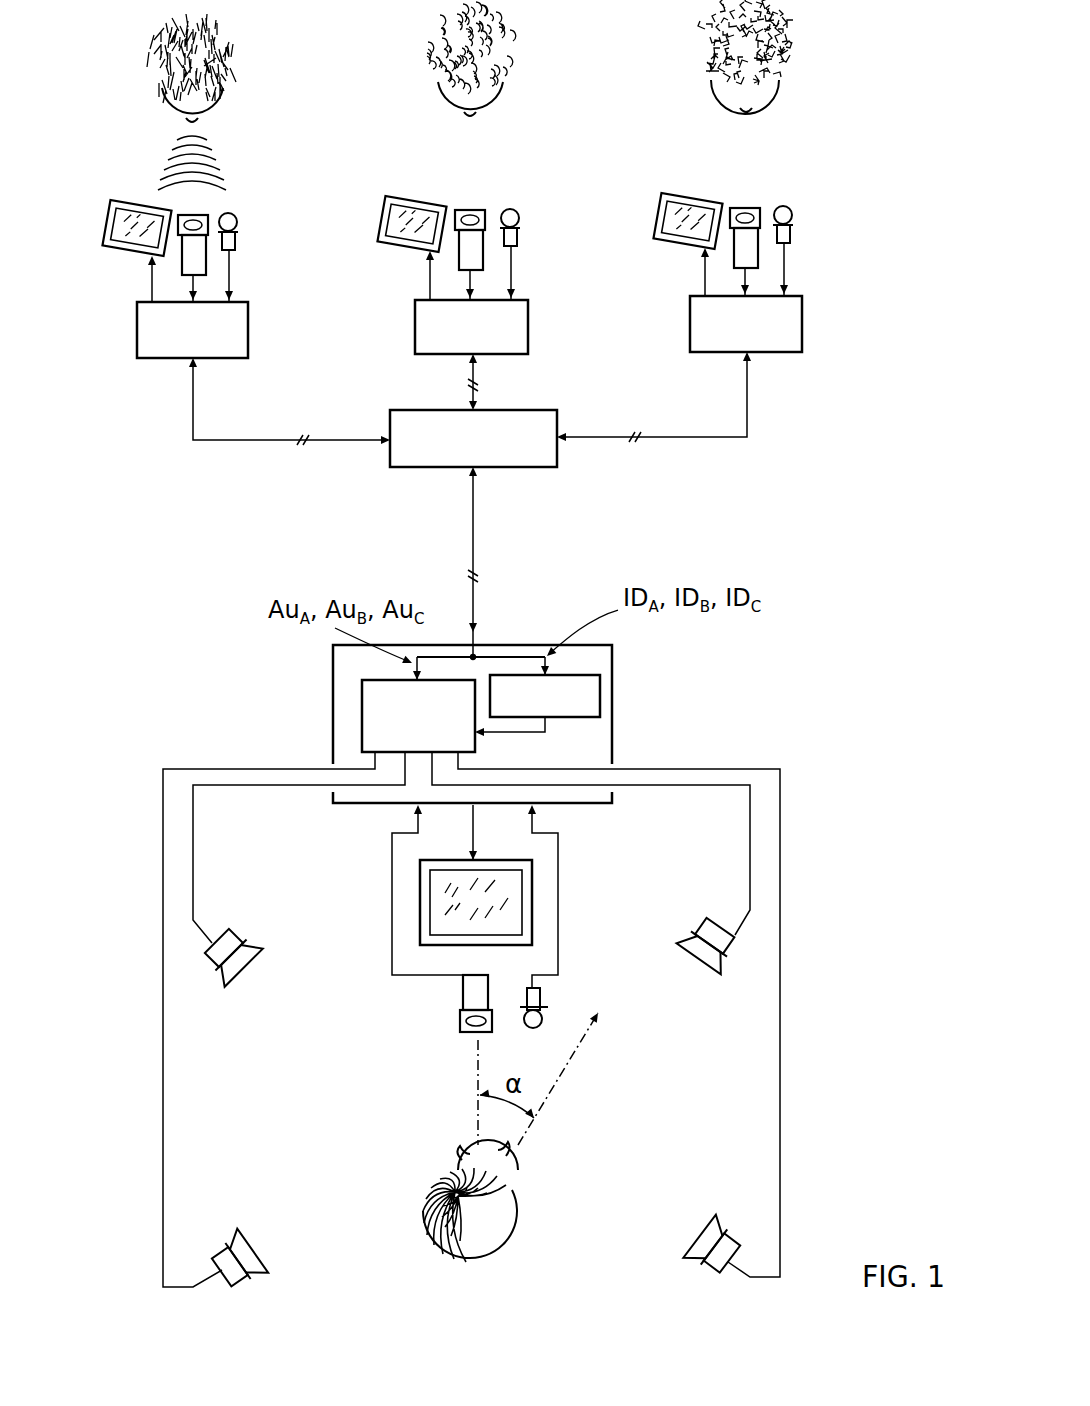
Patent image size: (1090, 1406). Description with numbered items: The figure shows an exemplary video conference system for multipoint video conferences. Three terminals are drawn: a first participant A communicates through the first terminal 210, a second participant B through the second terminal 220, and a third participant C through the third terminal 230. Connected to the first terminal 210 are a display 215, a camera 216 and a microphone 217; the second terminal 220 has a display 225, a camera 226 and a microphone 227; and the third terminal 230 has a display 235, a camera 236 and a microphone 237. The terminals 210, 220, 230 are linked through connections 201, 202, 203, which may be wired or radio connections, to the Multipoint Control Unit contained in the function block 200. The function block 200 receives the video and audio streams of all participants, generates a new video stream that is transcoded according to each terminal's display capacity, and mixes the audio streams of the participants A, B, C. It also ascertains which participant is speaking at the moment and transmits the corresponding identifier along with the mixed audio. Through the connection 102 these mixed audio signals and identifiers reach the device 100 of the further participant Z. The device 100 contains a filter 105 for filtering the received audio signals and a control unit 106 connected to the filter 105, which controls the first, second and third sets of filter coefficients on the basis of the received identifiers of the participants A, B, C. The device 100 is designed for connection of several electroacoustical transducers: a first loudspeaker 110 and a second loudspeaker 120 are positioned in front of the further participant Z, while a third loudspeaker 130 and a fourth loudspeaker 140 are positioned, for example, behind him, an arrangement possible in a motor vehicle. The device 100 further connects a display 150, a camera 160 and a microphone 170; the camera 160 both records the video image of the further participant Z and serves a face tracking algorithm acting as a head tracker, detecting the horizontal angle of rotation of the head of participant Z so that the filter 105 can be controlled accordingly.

The device 100 is at (617, 651).
The connection 102 is at (482, 598).
The filter 105 is at (362, 718).
The control unit 106 is at (587, 720).
The first loudspeaker 110 is at (205, 965).
The second loudspeaker 120 is at (735, 960).
The third loudspeaker 130 is at (215, 1243).
The fourth loudspeaker 140 is at (725, 1235).
The display 150 is at (520, 905).
The camera 160 is at (461, 1003).
The microphone 170 is at (542, 996).
The function block 200 is at (532, 470).
The connection 201 is at (325, 446).
The connection 202 is at (480, 395).
The connection 203 is at (642, 444).
The first terminal 210 is at (228, 362).
The display 215 is at (117, 250).
The camera 216 is at (207, 262).
The microphone 217 is at (240, 240).
The second terminal 220 is at (530, 344).
The display 225 is at (393, 248).
The camera 226 is at (483, 258).
The microphone 227 is at (522, 237).
The third terminal 230 is at (805, 345).
The display 235 is at (672, 246).
The camera 236 is at (760, 250).
The microphone 237 is at (795, 232).
The first participant A is at (240, 40).
The second participant B is at (516, 40).
The third participant C is at (797, 32).
The further participant Z is at (530, 1218).